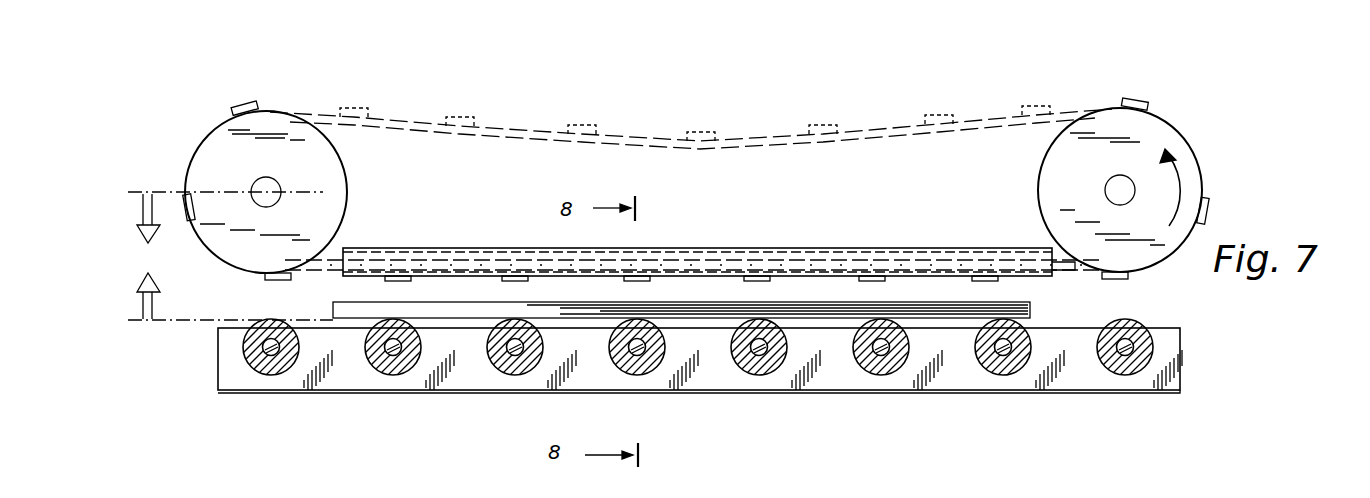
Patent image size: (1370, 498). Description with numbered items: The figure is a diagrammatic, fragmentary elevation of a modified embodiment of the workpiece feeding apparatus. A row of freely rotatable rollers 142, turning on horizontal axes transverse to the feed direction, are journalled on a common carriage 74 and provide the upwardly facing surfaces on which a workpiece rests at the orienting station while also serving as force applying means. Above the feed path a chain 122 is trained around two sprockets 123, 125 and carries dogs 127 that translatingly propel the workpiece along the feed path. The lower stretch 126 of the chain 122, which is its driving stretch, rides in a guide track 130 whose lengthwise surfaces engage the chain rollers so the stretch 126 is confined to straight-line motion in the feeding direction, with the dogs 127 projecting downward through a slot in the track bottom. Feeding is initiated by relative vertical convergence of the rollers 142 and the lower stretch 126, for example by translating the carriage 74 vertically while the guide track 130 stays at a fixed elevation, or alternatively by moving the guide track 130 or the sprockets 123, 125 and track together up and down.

The common carriage 74 is at (722, 372).
The chain 122 is at (755, 140).
The sprocket 123 is at (198, 157).
The sprocket 125 is at (1182, 149).
The lower stretch 126 is at (1068, 264).
The dogs 127 is at (243, 112).
The guide track 130 is at (900, 249).
The rollers 142 is at (500, 363).